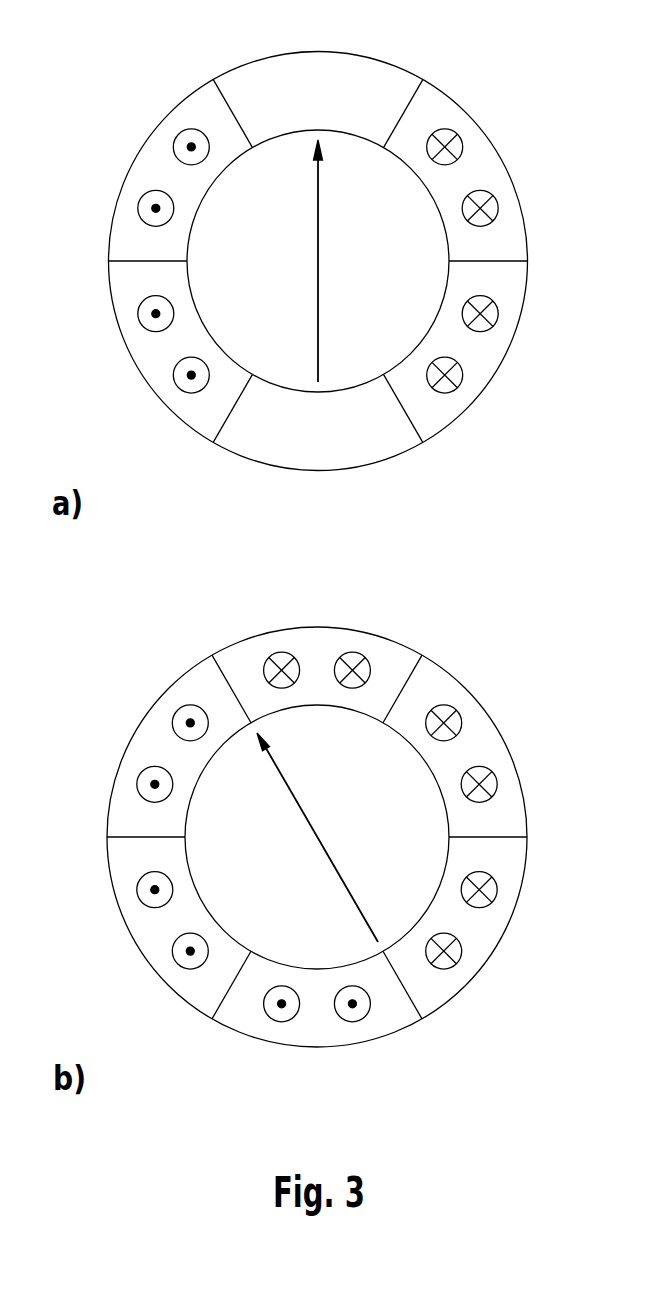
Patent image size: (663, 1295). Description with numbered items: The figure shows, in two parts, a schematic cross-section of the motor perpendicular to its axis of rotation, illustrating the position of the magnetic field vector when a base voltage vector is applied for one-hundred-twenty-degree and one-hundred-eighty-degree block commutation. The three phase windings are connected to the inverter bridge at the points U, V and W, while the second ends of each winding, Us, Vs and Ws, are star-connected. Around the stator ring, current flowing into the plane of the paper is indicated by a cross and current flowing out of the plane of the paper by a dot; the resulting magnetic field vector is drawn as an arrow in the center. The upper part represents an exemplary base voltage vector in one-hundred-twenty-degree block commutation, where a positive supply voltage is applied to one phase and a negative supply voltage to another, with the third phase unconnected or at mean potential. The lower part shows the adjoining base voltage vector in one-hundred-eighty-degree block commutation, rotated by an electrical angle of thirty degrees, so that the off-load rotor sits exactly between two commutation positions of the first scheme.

The phase winding connection point U is at (317, 362).
The second end of phase winding U US is at (317, 741).
The phase winding connection point V is at (483, 636).
The second end of phase winding V VS is at (152, 481).
The phase winding connection point W is at (151, 636).
The second end of phase winding W WS is at (490, 479).